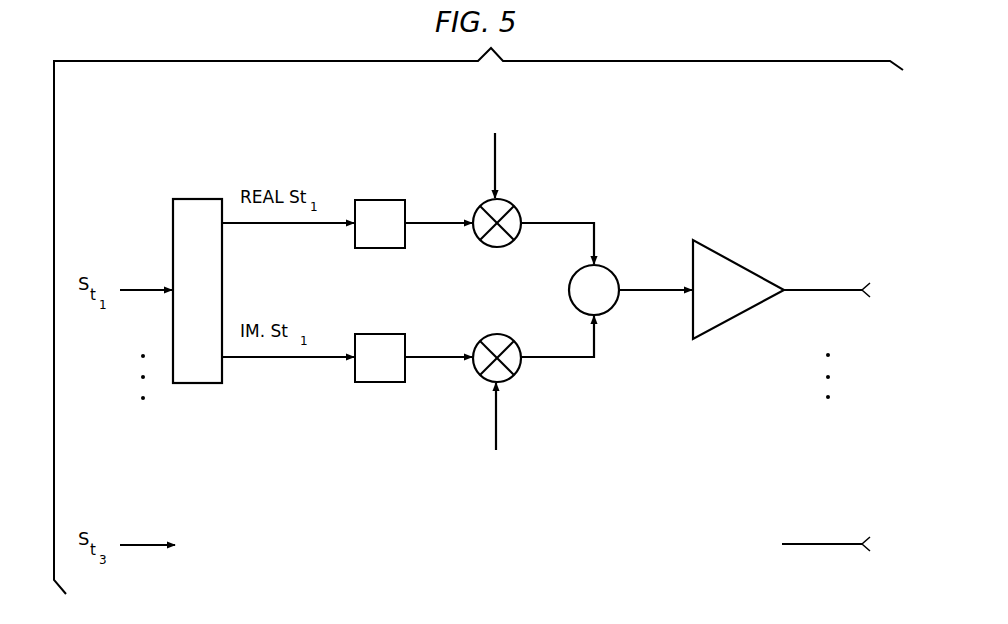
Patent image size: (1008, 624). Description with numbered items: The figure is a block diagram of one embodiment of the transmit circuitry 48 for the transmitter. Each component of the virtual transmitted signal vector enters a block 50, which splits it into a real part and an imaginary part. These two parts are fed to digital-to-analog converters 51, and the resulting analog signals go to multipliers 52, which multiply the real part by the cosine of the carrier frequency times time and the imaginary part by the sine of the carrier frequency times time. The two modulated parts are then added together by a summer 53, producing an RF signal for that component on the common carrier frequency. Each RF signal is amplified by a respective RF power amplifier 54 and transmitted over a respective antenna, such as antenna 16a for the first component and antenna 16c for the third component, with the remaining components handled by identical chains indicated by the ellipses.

The transmit circuitry 48 is at (672, 142).
The block 50 is at (194, 190).
The digital-to-analog converters 51 is at (377, 184).
The multipliers 52 is at (546, 118).
The summers 53 is at (608, 245).
The RF power amplifiers 54 is at (742, 262).
The antenna 16a is at (865, 288).
The antenna 16c is at (864, 542).